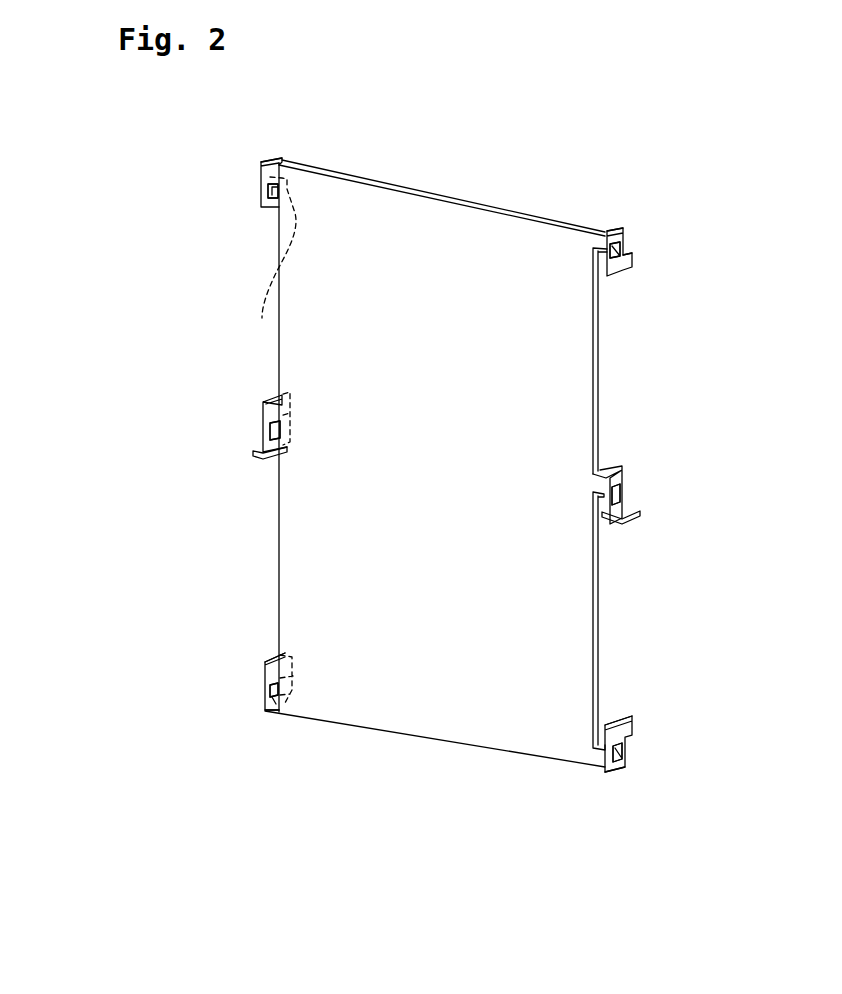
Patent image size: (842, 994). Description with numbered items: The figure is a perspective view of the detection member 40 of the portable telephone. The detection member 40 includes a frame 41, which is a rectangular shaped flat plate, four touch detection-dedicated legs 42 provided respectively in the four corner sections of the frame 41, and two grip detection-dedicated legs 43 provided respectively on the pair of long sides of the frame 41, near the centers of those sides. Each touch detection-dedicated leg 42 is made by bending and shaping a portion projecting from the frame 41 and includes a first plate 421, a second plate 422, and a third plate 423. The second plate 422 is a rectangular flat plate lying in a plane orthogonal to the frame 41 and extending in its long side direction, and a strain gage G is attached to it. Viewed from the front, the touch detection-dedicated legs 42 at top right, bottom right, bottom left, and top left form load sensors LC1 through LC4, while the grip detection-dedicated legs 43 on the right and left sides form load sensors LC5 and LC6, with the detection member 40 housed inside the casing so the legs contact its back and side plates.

The detection member 40 is at (736, 190).
The frame 41 is at (457, 247).
The touch detection-dedicated leg 42 is at (247, 196).
The grip detection-dedicated leg 43 is at (257, 452).
The first plate 421 is at (270, 166).
The second plate 422 is at (615, 230).
The third plate 423 is at (697, 730).
The strain gage G is at (272, 203).